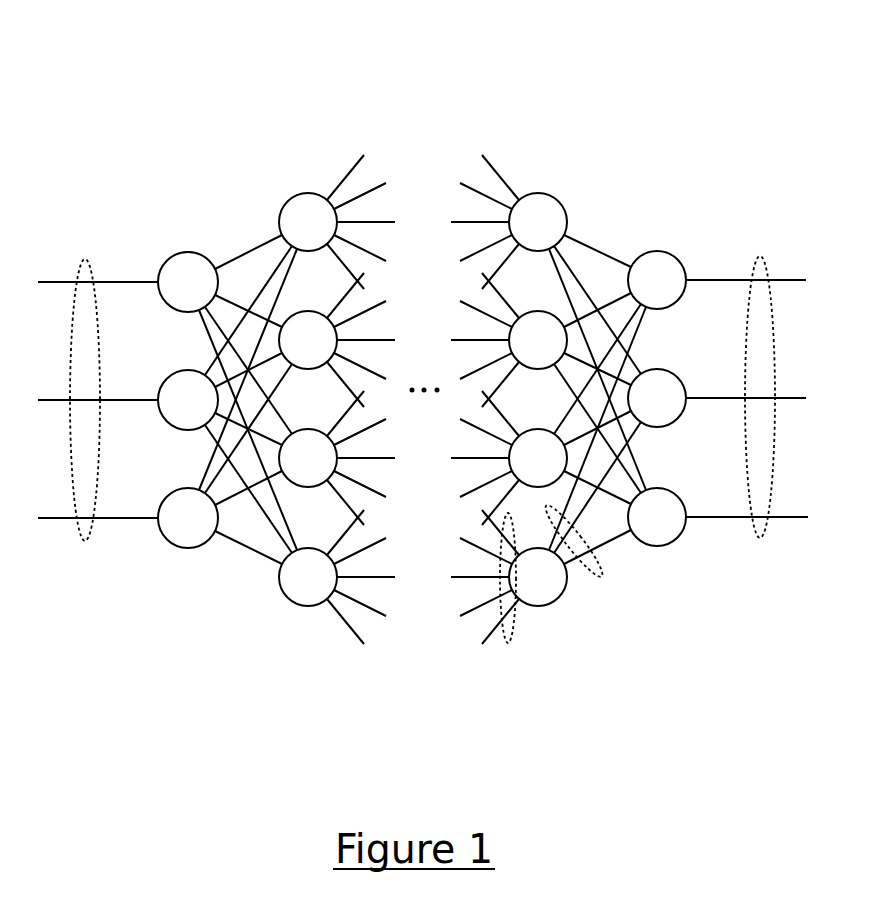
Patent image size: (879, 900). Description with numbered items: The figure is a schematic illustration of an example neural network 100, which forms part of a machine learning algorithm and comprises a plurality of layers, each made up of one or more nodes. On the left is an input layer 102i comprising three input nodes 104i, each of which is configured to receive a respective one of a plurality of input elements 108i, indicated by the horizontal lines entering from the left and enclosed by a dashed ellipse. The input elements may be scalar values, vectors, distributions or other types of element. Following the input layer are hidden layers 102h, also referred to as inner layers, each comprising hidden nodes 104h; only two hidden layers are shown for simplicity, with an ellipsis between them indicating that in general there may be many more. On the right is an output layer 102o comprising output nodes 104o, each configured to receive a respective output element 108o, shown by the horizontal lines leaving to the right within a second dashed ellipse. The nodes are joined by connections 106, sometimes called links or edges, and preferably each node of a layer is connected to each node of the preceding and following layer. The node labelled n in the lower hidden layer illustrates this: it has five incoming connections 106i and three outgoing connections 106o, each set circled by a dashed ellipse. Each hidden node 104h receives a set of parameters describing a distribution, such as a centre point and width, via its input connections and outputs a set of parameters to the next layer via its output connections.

The neural network 100 is at (187, 93).
The input layer 102i is at (187, 576).
The hidden layers 102h is at (302, 647).
The output layer 102o is at (660, 567).
The input nodes 104i is at (188, 252).
The hidden nodes 104h is at (308, 193).
The output nodes 104o is at (657, 251).
The connections 106 is at (246, 240).
The incoming connections 106i is at (505, 640).
The outgoing connections 106o is at (600, 575).
The input elements 108i is at (85, 258).
The output elements 108o is at (760, 255).